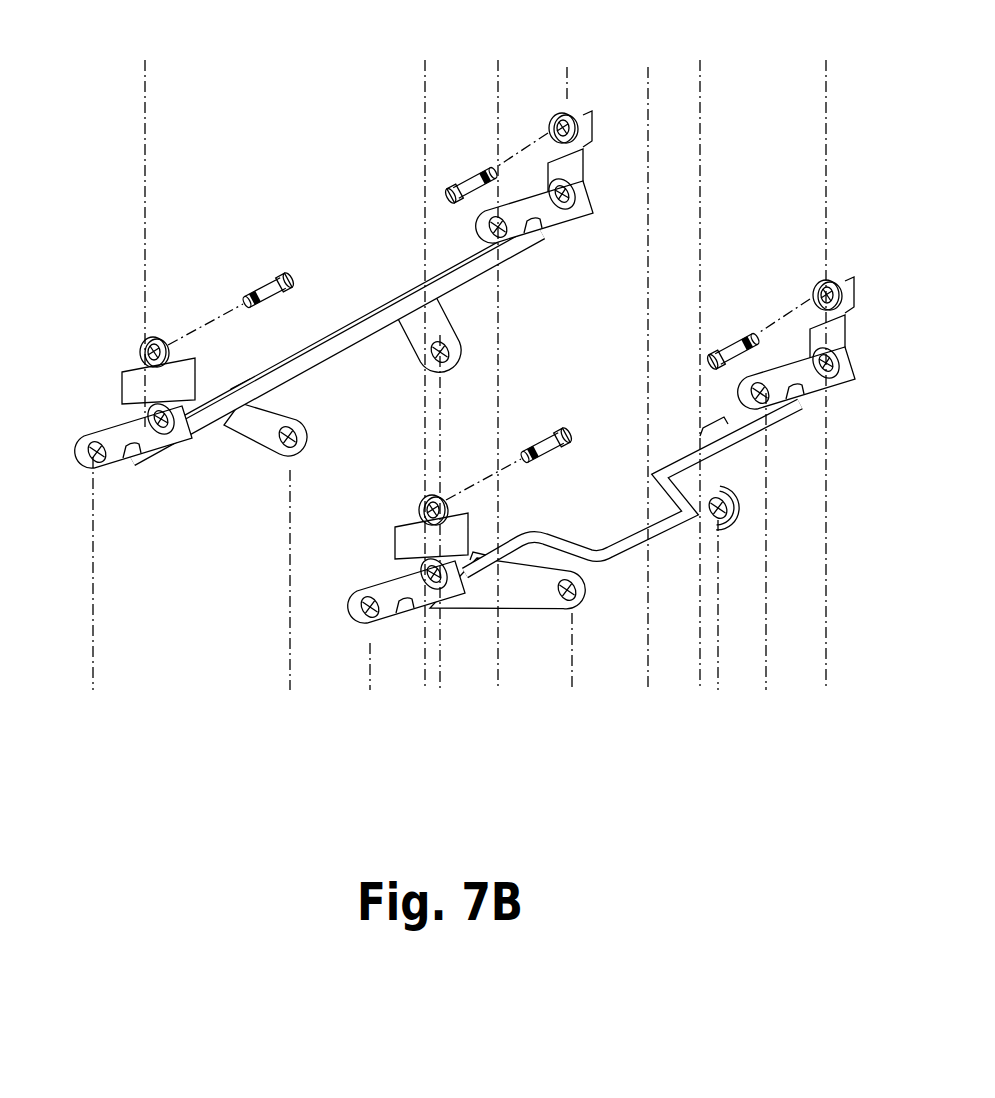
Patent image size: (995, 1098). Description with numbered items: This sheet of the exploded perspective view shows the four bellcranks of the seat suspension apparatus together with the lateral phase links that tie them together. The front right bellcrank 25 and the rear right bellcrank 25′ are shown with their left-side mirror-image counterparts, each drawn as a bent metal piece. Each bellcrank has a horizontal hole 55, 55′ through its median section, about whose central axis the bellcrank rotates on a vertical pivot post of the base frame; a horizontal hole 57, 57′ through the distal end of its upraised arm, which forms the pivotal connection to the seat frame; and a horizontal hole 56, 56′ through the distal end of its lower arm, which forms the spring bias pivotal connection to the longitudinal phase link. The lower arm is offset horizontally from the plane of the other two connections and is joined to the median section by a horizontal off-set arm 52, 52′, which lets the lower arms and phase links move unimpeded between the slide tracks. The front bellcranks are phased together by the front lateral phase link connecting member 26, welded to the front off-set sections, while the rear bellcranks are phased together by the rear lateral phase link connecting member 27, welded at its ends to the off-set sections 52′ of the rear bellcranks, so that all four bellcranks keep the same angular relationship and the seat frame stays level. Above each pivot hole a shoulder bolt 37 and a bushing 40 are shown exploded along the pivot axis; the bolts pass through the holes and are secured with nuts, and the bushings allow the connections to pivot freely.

The bellcrank 25 is at (405, 627).
The bellcrank 25′ is at (125, 467).
The front lateral phase link connecting member 26 is at (655, 548).
The rear lateral phase link connecting member 27 is at (326, 345).
The shoulder bolt 37 is at (272, 283).
The bushing 40 is at (162, 343).
The horizontal arm 52 is at (470, 595).
The bellcrank off-set section 52′ is at (192, 433).
The horizontal hole 55 is at (368, 612).
The horizontal hole 55′ is at (90, 455).
The horizontal hole 56 is at (565, 597).
The horizontal hole 56′ is at (283, 440).
The horizontal hole 57 is at (428, 570).
The horizontal hole 57′ is at (148, 414).